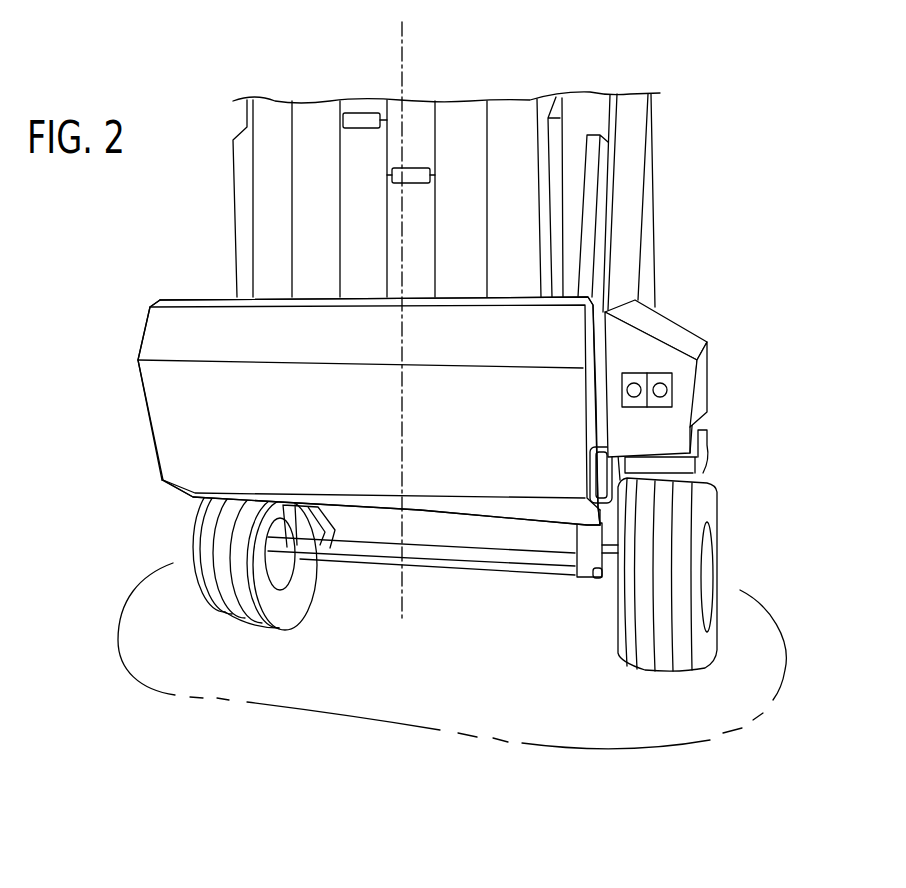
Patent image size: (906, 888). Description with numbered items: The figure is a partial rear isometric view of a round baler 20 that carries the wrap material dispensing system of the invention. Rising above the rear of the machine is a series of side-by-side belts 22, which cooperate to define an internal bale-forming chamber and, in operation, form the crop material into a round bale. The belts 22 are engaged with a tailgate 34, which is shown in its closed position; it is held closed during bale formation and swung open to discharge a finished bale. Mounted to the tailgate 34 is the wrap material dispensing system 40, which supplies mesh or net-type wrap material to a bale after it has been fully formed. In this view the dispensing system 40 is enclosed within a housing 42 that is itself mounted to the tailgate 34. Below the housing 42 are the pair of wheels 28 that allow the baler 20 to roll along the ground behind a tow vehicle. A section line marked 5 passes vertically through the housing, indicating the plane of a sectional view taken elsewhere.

The round baler 20 is at (418, 344).
The side-by-side belts 22 is at (365, 104).
The tailgate 34 is at (633, 255).
The wrap material dispensing system 40 is at (329, 394).
The housing 42 is at (146, 422).
The wheels 28 is at (195, 538).
The section line 5- 5 is at (472, 37).